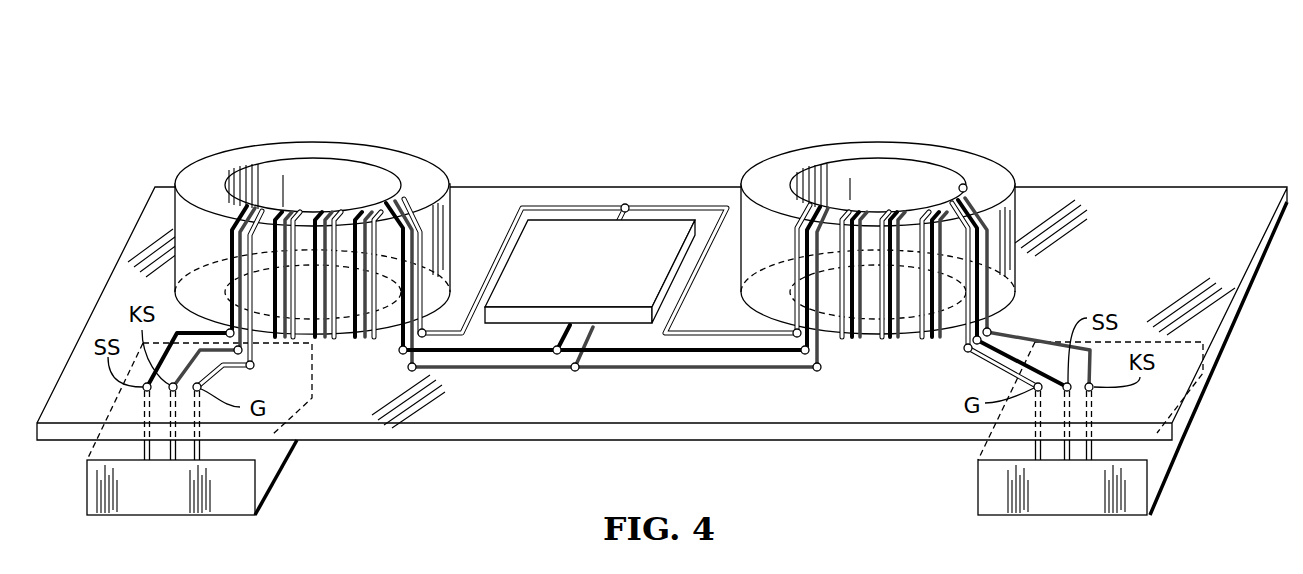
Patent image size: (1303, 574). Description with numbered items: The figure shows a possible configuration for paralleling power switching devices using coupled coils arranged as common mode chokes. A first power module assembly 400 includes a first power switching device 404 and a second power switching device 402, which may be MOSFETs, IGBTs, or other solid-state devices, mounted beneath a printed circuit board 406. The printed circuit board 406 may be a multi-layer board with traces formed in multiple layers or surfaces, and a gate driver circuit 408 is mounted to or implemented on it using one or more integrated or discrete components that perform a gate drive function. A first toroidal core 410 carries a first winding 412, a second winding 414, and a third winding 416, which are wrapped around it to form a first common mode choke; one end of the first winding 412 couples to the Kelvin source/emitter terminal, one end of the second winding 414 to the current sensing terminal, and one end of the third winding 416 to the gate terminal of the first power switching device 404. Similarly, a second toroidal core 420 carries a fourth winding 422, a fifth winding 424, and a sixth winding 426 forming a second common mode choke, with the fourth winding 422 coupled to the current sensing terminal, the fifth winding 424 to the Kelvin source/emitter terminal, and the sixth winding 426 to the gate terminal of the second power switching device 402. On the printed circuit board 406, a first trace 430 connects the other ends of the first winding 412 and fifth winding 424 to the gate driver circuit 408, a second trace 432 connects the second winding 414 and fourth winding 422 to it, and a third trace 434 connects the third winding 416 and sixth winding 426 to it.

The first power module assembly 400 is at (163, 90).
The second power switching device 402 is at (260, 493).
The first power switching device 404 is at (977, 497).
The printed circuit board 406 is at (1148, 187).
The gate driver circuit 408 is at (598, 219).
The first toroidal core 410 is at (1008, 173).
The first winding 412 is at (963, 183).
The second winding 414 is at (958, 203).
The third winding 416 is at (940, 200).
The second toroidal core 420 is at (183, 173).
The fourth winding 422 is at (233, 207).
The fifth winding 424 is at (257, 213).
The sixth winding 426 is at (268, 217).
The first trace 430 is at (488, 367).
The second trace 432 is at (730, 353).
The third trace 434 is at (570, 207).